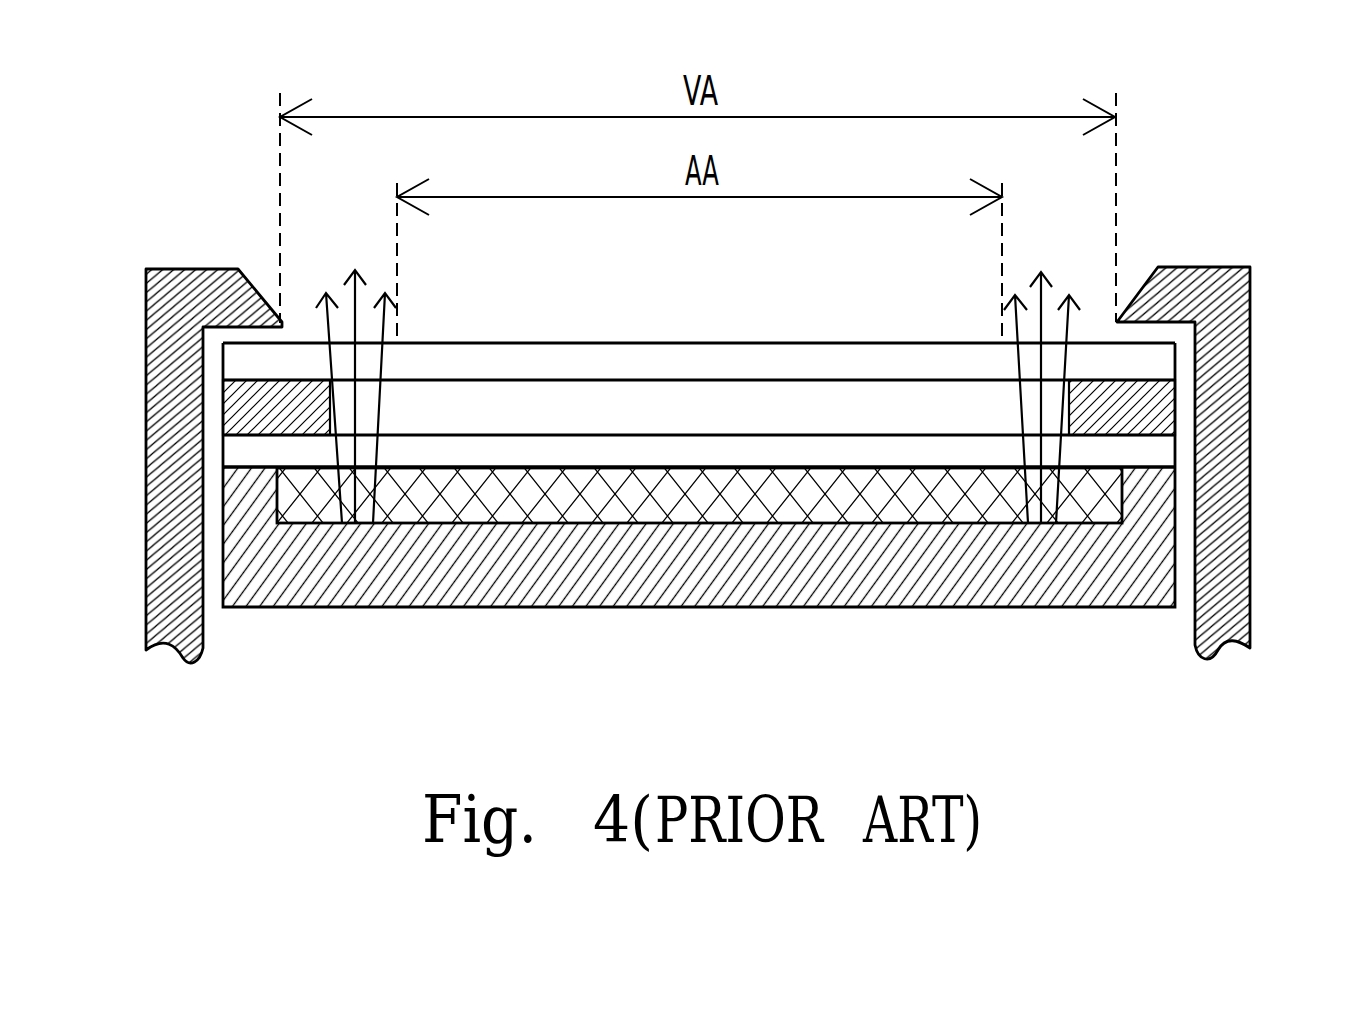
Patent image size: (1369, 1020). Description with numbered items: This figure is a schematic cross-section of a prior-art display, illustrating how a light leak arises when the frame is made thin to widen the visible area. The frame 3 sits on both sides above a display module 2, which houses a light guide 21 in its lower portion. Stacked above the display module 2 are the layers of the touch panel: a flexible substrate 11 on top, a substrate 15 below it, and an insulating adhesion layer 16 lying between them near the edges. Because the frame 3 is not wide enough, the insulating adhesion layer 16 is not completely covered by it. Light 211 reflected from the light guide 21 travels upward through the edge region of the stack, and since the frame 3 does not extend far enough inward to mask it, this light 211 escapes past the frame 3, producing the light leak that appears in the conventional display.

The display module 2 is at (1117, 560).
The frame 3 is at (1185, 283).
The flexible substrate 11 is at (1142, 363).
The substrate 15 is at (1142, 453).
The insulating adhesion layer 16 is at (1140, 397).
The light guide 21 is at (277, 496).
The light 211 is at (698, 370).